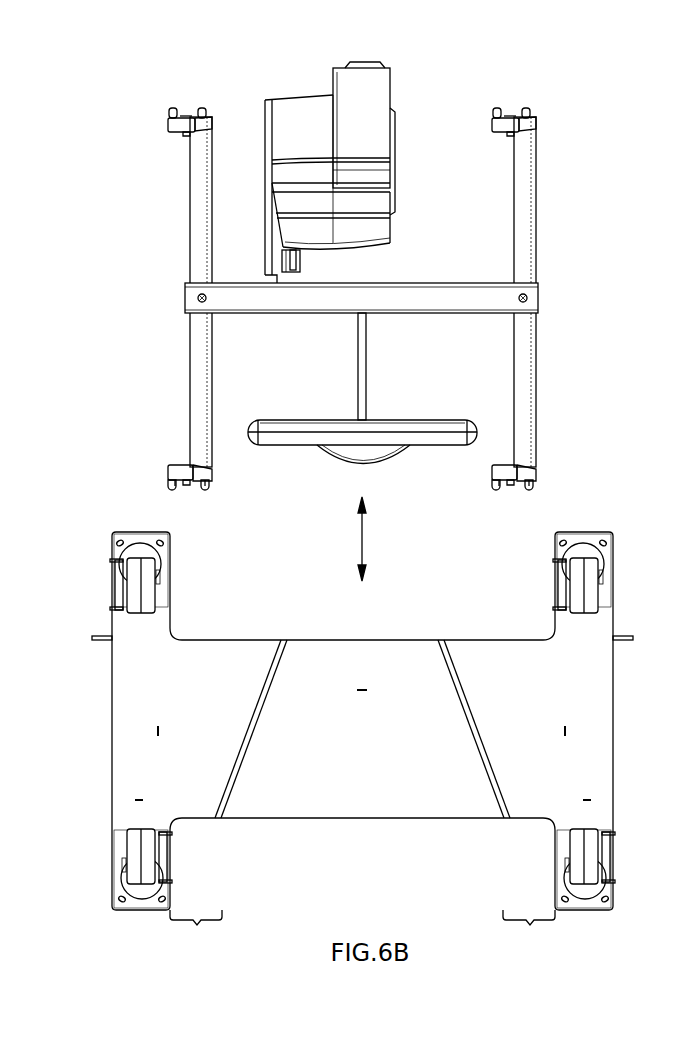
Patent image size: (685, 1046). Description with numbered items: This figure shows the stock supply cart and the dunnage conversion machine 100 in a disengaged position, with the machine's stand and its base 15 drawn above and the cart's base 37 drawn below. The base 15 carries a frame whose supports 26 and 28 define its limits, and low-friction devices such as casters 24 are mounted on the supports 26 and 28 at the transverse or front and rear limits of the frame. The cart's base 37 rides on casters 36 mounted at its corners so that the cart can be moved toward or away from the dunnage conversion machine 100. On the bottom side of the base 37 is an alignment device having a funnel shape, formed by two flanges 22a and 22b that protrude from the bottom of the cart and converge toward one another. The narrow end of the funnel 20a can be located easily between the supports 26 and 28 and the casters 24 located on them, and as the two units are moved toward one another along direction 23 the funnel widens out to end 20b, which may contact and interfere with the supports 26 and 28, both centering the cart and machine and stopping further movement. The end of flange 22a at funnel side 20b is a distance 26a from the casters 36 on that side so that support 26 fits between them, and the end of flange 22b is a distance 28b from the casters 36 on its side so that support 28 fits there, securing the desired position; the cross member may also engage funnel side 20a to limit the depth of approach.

The dunnage conversion machine 100 is at (430, 112).
The base 15 is at (455, 290).
The direction 23 is at (368, 540).
The casters 24 is at (188, 115).
The support 26 is at (202, 380).
The support 28 is at (525, 403).
The narrow end of the funnel 20a is at (446, 662).
The funnel end 20b is at (218, 822).
The flange 22a is at (240, 762).
The flange 22b is at (485, 762).
The distance 26a is at (196, 932).
The distance 28b is at (529, 932).
The casters 36 is at (135, 588).
The base 37 is at (135, 734).